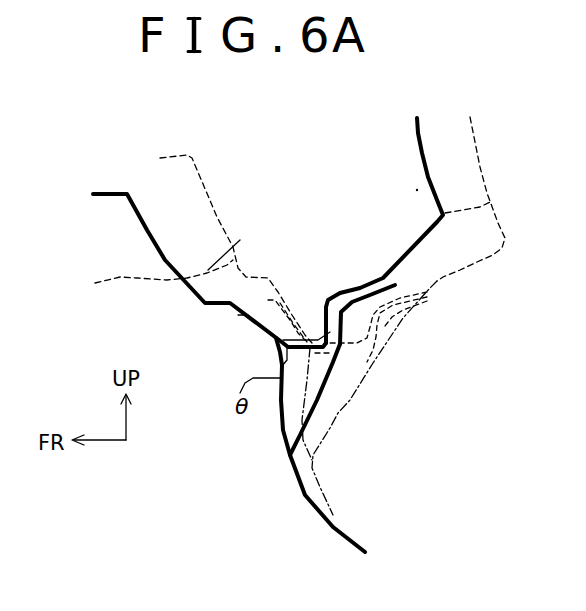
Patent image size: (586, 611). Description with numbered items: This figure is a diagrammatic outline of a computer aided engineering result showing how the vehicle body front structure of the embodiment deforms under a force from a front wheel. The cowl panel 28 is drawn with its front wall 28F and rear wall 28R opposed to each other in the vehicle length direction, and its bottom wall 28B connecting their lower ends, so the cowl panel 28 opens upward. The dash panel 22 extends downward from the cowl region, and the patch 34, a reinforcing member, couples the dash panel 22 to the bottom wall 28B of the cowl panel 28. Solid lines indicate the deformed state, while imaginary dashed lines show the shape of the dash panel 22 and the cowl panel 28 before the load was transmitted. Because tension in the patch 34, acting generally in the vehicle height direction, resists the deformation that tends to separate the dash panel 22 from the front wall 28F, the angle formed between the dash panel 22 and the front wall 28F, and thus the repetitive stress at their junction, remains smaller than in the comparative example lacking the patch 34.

The cowl panel 28 is at (138, 220).
The front wall 28F is at (163, 260).
The rear wall 28R is at (440, 213).
The bottom wall 28B is at (440, 277).
The patch 34 is at (327, 383).
The dash panel 22 is at (331, 510).